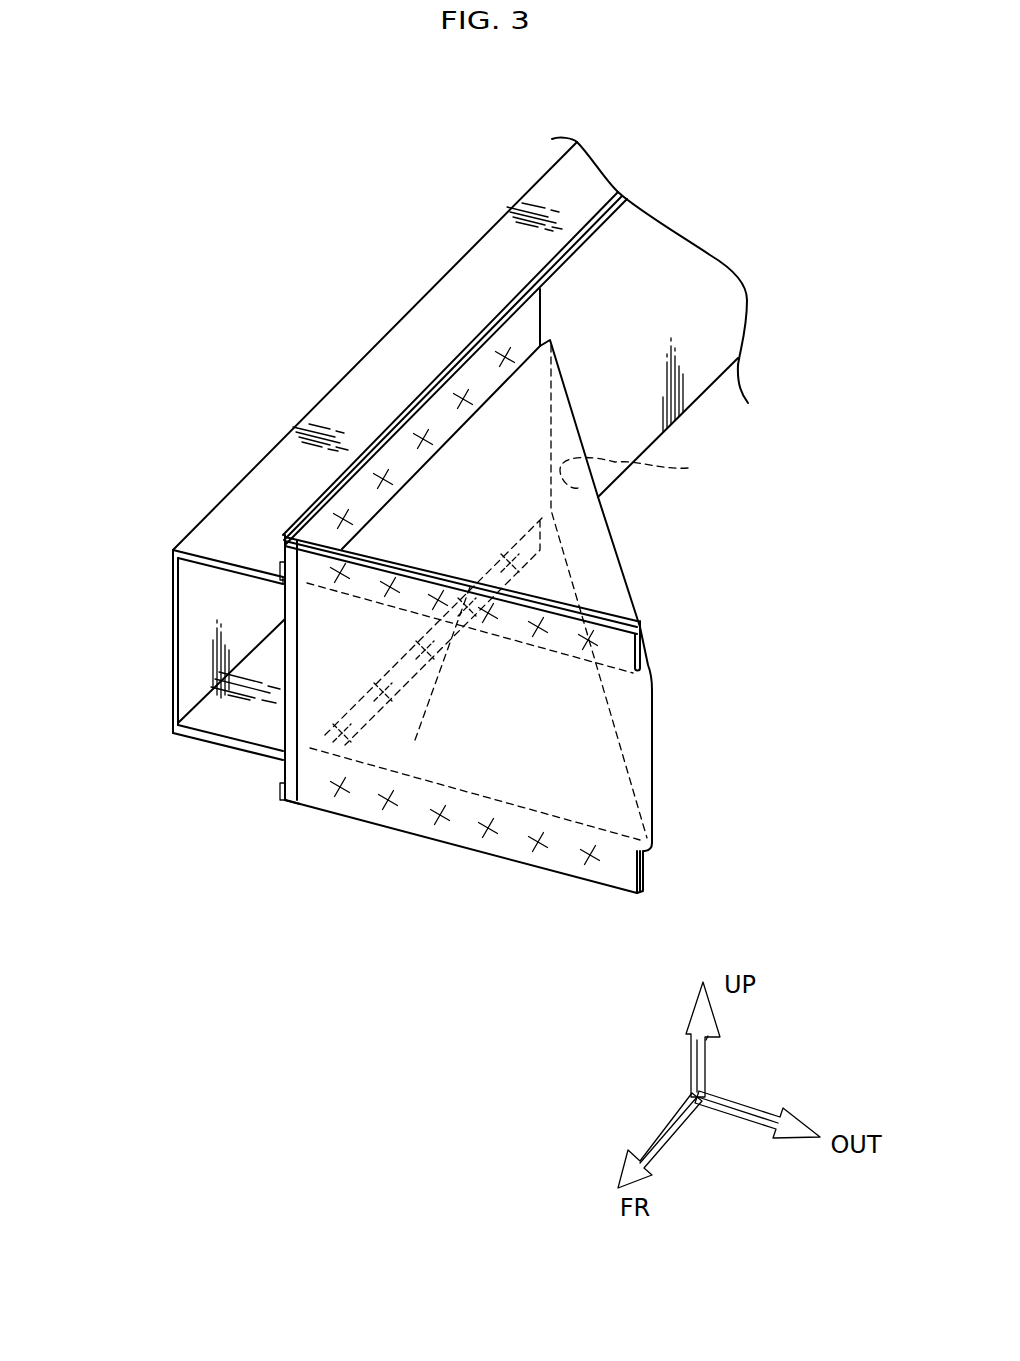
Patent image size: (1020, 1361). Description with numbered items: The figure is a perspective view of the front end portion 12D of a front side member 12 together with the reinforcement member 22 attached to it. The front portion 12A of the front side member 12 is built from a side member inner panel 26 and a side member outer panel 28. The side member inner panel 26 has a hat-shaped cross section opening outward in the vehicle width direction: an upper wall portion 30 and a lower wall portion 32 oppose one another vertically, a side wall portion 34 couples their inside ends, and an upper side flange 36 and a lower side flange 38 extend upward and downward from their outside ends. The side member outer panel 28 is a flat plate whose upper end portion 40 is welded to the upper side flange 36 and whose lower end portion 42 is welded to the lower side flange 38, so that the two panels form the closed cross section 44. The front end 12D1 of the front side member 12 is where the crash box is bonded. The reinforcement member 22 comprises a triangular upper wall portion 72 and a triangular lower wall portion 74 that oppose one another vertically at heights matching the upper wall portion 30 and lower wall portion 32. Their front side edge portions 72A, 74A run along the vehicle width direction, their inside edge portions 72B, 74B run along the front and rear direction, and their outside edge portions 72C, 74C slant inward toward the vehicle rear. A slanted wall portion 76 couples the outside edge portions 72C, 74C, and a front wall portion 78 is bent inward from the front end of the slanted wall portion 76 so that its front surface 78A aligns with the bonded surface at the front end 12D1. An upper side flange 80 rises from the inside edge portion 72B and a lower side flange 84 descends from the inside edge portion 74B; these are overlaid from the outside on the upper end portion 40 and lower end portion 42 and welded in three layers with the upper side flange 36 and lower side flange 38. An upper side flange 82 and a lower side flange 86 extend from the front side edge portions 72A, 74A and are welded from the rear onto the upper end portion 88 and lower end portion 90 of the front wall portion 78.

The front side member 12 is at (441, 335).
The front portion 12A is at (485, 232).
The front end portion 12D is at (311, 405).
The front end 12D1 is at (175, 580).
The reinforcement member 22 is at (476, 582).
The side member inner panel 26 is at (173, 645).
The side member outer panel 28 is at (283, 721).
The upper wall portion 30 is at (217, 533).
The lower wall portion 32 is at (215, 725).
The side wall portion 34 is at (118, 641).
The upper side flange 36 is at (284, 566).
The lower side flange 38 is at (279, 794).
The upper end portion 40 is at (275, 583).
The lower end portion 42 is at (294, 804).
The closed cross section 44 is at (192, 682).
The upper wall portion 72 is at (517, 450).
The vehicle front side edge portion 72A is at (652, 680).
The vehicle width direction inside edge portion 72B is at (486, 395).
The vehicle width direction outside edge portion 72C is at (514, 604).
The lower wall portion 74 is at (532, 628).
The vehicle front side edge portion 74A is at (645, 858).
The vehicle width direction inside edge portion 74B is at (350, 722).
The vehicle width direction outside edge portion 74C is at (660, 805).
The slanted wall portion 76 is at (639, 468).
The front wall portion 78 is at (454, 726).
The front surface 78A is at (562, 785).
The upper side flange 80 is at (405, 445).
The upper side flange 82 is at (607, 607).
The lower side flange 84 is at (415, 740).
The lower side flange 86 is at (646, 872).
The upper end portion 88 is at (620, 643).
The lower end portion 90 is at (615, 870).